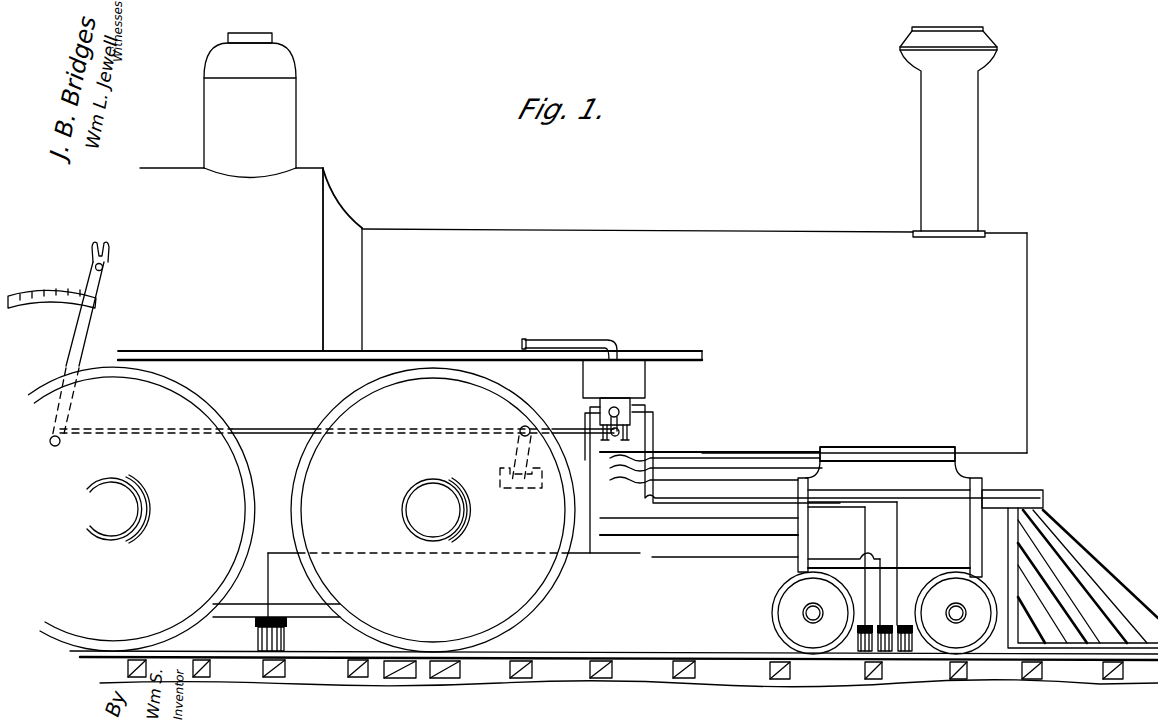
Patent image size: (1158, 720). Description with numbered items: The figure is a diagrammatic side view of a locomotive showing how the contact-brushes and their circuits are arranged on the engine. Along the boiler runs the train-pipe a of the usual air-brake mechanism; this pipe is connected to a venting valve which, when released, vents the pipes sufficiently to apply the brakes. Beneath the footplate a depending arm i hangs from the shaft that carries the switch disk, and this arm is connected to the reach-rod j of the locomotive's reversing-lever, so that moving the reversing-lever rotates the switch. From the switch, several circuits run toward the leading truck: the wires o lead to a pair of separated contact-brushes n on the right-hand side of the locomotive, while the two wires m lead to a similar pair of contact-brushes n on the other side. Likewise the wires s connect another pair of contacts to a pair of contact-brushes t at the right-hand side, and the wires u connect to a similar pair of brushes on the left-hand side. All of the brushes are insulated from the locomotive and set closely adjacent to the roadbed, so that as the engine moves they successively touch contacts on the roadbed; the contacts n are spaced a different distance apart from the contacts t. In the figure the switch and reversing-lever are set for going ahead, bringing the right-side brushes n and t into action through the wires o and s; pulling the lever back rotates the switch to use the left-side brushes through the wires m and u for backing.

The train-pipe a is at (562, 340).
The depending arm i is at (645, 397).
The reach-rod j is at (560, 428).
The wires u is at (577, 466).
The wires m is at (750, 462).
The wires o is at (865, 536).
The wires s is at (604, 556).
The contact-brushes t is at (262, 652).
The contact-brushes n is at (866, 650).